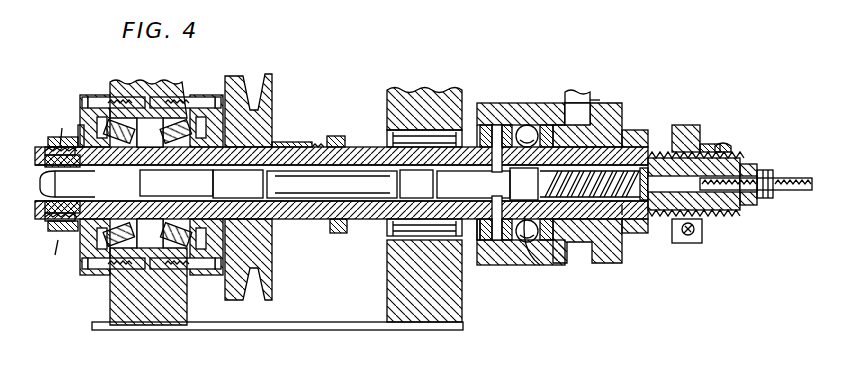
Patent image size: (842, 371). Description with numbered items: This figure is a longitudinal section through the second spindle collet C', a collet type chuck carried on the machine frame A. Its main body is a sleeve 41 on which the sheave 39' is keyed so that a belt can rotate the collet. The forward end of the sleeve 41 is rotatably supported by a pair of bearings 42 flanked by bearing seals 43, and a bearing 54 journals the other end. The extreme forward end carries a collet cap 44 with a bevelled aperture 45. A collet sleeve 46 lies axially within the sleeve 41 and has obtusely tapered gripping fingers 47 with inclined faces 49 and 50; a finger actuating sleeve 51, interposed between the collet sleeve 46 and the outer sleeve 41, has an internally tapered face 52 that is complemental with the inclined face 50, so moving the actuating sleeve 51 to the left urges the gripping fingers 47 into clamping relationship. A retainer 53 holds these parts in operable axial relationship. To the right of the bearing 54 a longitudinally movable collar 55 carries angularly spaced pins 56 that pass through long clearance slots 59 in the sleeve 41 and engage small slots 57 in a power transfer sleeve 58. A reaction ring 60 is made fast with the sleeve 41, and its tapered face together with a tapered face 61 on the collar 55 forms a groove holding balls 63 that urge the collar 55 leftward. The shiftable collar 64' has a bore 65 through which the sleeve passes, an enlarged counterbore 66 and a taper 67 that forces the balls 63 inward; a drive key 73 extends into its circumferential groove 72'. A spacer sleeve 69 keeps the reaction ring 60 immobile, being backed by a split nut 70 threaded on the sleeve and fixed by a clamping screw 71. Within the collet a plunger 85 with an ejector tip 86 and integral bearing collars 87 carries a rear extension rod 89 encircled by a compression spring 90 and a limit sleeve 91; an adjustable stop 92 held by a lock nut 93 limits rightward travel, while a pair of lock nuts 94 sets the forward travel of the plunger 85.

The sheave 39' is at (259, 170).
The sleeve 41 is at (366, 153).
The bearings 42 is at (160, 118).
The bearing seals 43 is at (92, 96).
The collet cap 44 is at (62, 135).
The bevelled aperture 45 is at (52, 145).
The collet sleeve 46 is at (80, 140).
The gripping fingers 47 is at (48, 162).
The inclined face 49 is at (46, 151).
The inclined face 50 is at (42, 184).
The finger actuating sleeve 51 is at (52, 228).
The internally tapered face 52 is at (46, 217).
The retainer 53 is at (309, 147).
The bearing 54 is at (390, 242).
The longitudinally movable collar 55 is at (480, 232).
The pins 56 is at (508, 240).
The slots 57 is at (528, 243).
The power transfer sleeve 58 is at (465, 150).
The slots 59 is at (480, 148).
The reaction ring 60 is at (585, 94).
The tapered face 61 is at (506, 135).
The balls 63 is at (528, 126).
The shiftable collar 64' is at (597, 112).
The bore 65 is at (612, 140).
The enlarged counterbore 66 is at (548, 240).
The taper 67 is at (494, 241).
The spacer sleeve 69 is at (624, 160).
The split nut 70 is at (690, 127).
The clamping screw 71 is at (684, 236).
The circumferential groove 72' is at (587, 257).
The drive key 73 is at (593, 100).
The plunger 85 is at (318, 192).
The ejector tip 86 is at (48, 206).
The integral collars 87 is at (243, 180).
The extension rod 89 is at (794, 178).
The compression spring 90 is at (658, 150).
The limit sleeve 91 is at (624, 200).
The adjustable stop 92 is at (745, 164).
The lock nut 93 is at (723, 146).
The lock nuts 94 is at (765, 170).
The frame A is at (384, 331).
The spindle collet C' is at (44, 252).